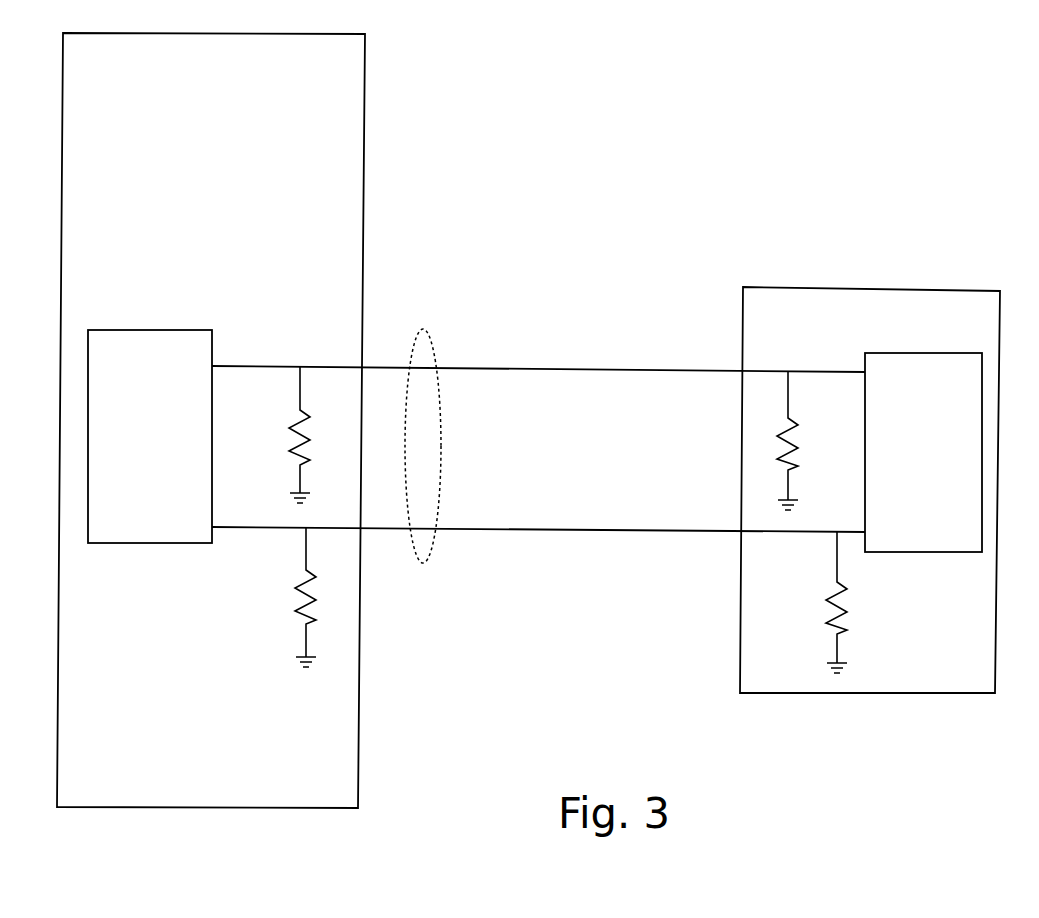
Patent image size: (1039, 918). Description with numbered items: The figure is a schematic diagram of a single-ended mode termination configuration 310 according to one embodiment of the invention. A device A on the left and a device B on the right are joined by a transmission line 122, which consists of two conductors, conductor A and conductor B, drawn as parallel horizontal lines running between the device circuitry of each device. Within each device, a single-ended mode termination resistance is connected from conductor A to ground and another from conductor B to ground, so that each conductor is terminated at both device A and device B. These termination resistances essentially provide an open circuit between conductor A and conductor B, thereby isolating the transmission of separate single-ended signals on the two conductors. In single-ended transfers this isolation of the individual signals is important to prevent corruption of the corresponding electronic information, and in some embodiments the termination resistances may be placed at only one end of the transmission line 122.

The single-ended mode termination configuration 310 is at (910, 848).
The transmission line 122 is at (427, 330).